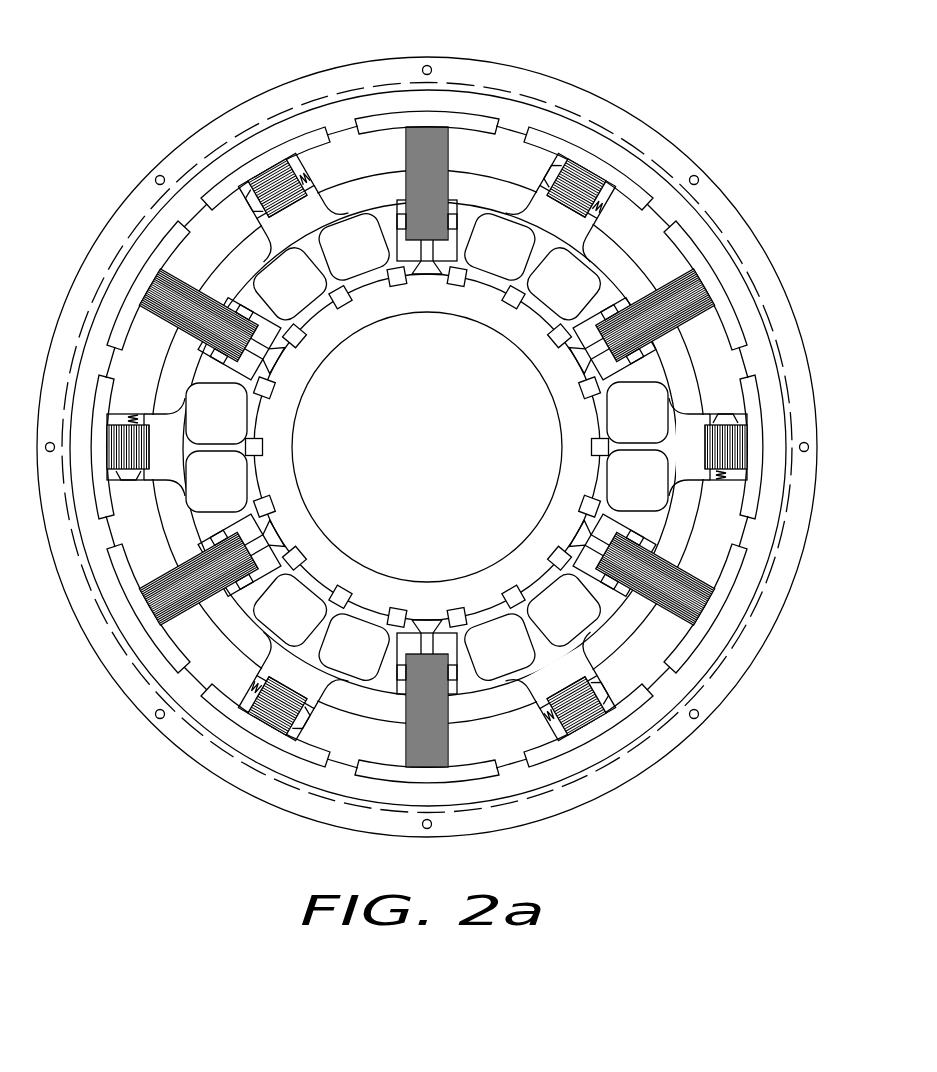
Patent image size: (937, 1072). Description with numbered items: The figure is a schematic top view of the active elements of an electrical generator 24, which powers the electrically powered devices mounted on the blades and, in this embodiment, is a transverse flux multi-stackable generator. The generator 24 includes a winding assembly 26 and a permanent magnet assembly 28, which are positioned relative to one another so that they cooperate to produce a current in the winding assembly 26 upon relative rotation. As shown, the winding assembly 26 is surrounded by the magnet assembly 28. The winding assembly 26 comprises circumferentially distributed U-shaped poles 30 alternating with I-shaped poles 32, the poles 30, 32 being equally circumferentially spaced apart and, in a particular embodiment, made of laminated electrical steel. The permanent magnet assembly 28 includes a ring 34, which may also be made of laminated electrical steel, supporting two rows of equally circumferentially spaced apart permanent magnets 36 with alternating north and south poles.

The electrical generator 24 is at (138, 108).
The winding assembly 26 is at (684, 378).
The permanent magnet assembly 28 is at (672, 200).
The U-shaped poles 30 is at (687, 603).
The I-shaped poles 32 is at (592, 716).
The ring 34 is at (720, 262).
The permanent magnets 36 is at (553, 135).